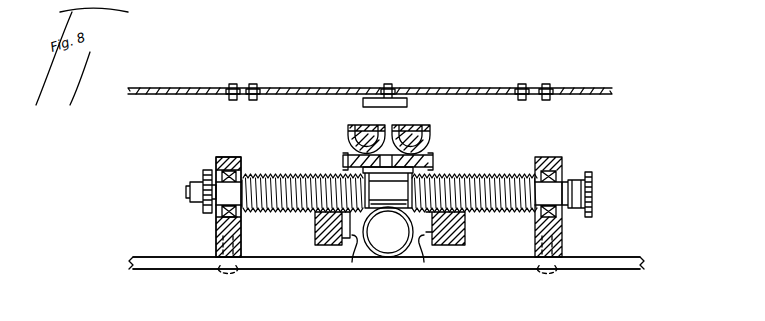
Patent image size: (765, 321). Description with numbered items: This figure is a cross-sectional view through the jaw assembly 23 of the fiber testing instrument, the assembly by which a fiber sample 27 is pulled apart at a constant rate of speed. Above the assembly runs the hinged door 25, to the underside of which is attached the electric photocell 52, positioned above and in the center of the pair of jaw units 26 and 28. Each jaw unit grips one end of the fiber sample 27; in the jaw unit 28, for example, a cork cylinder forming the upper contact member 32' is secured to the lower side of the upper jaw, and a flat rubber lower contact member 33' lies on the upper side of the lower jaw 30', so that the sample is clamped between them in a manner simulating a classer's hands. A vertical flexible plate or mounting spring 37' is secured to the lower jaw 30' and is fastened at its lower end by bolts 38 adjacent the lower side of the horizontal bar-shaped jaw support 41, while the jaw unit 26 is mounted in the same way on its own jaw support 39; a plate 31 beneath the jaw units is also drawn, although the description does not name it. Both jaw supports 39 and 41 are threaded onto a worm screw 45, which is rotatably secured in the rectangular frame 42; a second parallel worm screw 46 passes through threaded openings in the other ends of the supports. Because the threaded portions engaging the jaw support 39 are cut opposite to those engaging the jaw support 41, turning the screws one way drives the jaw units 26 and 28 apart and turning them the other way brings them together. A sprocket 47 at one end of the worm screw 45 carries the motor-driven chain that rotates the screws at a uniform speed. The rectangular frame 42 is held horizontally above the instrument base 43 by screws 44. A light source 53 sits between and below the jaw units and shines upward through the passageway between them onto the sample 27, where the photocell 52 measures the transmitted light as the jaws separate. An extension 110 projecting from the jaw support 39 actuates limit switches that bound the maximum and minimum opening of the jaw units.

The hinged door 25 is at (503, 88).
The electric photocell 52 is at (362, 100).
The jaw unit 26 is at (348, 135).
The fiber sample 27 is at (392, 127).
The jaw unit 28 is at (412, 126).
The upper contact member 32' is at (465, 117).
The lower contact member 33' is at (466, 127).
The lower jaw 30' is at (457, 142).
The mounting spring 37' is at (468, 149).
The plate 31 is at (341, 165).
The extension 110 is at (440, 172).
The worm screw 45 is at (513, 170).
The jaw assembly 23 is at (228, 157).
The rectangular frame 42 is at (216, 217).
The sprocket 47 is at (593, 188).
The screws 44 is at (223, 265).
The jaw support 41 is at (315, 228).
The jaw support 39 is at (465, 217).
The light source 53 is at (390, 240).
The bolts 38 is at (355, 258).
The worm screw 46 is at (305, 270).
The instrument base 43 is at (620, 257).